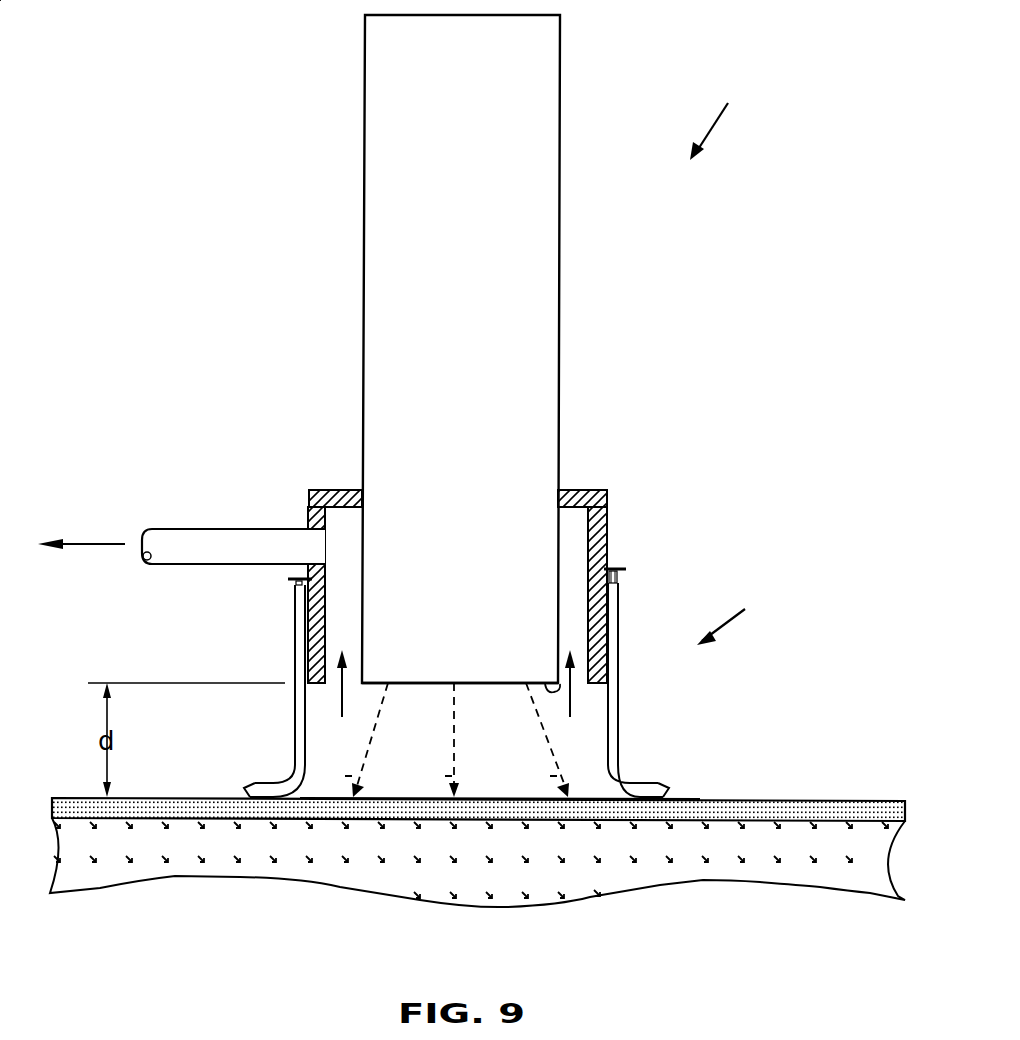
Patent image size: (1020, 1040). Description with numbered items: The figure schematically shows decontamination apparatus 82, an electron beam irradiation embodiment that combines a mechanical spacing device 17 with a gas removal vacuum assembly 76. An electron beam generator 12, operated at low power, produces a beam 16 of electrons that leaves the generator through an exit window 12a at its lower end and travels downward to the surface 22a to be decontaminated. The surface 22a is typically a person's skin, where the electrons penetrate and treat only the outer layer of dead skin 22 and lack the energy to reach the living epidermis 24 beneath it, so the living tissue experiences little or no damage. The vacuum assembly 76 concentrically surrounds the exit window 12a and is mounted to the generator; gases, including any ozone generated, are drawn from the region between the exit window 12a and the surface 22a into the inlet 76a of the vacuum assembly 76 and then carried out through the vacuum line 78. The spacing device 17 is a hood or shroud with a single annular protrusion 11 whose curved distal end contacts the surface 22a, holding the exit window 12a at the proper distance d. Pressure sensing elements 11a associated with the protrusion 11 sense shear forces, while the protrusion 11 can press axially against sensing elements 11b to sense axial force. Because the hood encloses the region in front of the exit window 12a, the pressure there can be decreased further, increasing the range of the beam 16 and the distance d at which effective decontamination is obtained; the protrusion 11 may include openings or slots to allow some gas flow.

The decontamination apparatus 82 is at (725, 118).
The electron beam generator 12 is at (540, 232).
The vacuum line 78 is at (212, 535).
The gas removal vacuum assembly 76 is at (603, 523).
The inlet 76a is at (545, 682).
The protrusion 11 is at (450, 657).
The pressure sensing element 11a is at (305, 633).
The sensing element 11b is at (297, 607).
The mechanical spacing device 17 is at (738, 612).
The exit window 12a is at (428, 686).
The surface 22a is at (497, 798).
The beam of electrons 16 is at (562, 774).
The outer layer of dead skin 22 is at (805, 802).
The living epidermis 24 is at (810, 883).